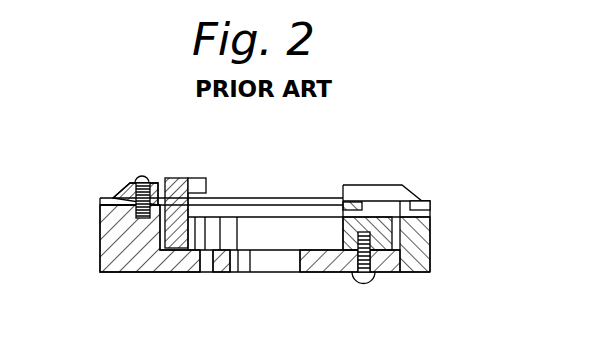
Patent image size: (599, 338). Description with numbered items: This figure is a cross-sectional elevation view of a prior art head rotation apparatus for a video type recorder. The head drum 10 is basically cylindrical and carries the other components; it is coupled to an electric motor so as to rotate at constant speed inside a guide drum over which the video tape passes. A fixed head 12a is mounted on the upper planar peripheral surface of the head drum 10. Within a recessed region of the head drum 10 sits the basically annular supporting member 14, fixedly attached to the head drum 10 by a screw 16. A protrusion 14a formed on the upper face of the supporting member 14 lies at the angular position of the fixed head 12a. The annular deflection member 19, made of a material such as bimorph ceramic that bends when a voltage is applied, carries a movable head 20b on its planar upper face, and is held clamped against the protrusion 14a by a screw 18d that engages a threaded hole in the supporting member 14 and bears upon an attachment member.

The head drum 10 is at (425, 274).
The fixed head 12a is at (118, 197).
The supporting member 14 is at (344, 226).
The protrusion 14a is at (195, 212).
The screw 16 is at (361, 284).
The screw 18d is at (178, 178).
The deflection member 19 is at (267, 198).
The movable head 20b is at (387, 192).